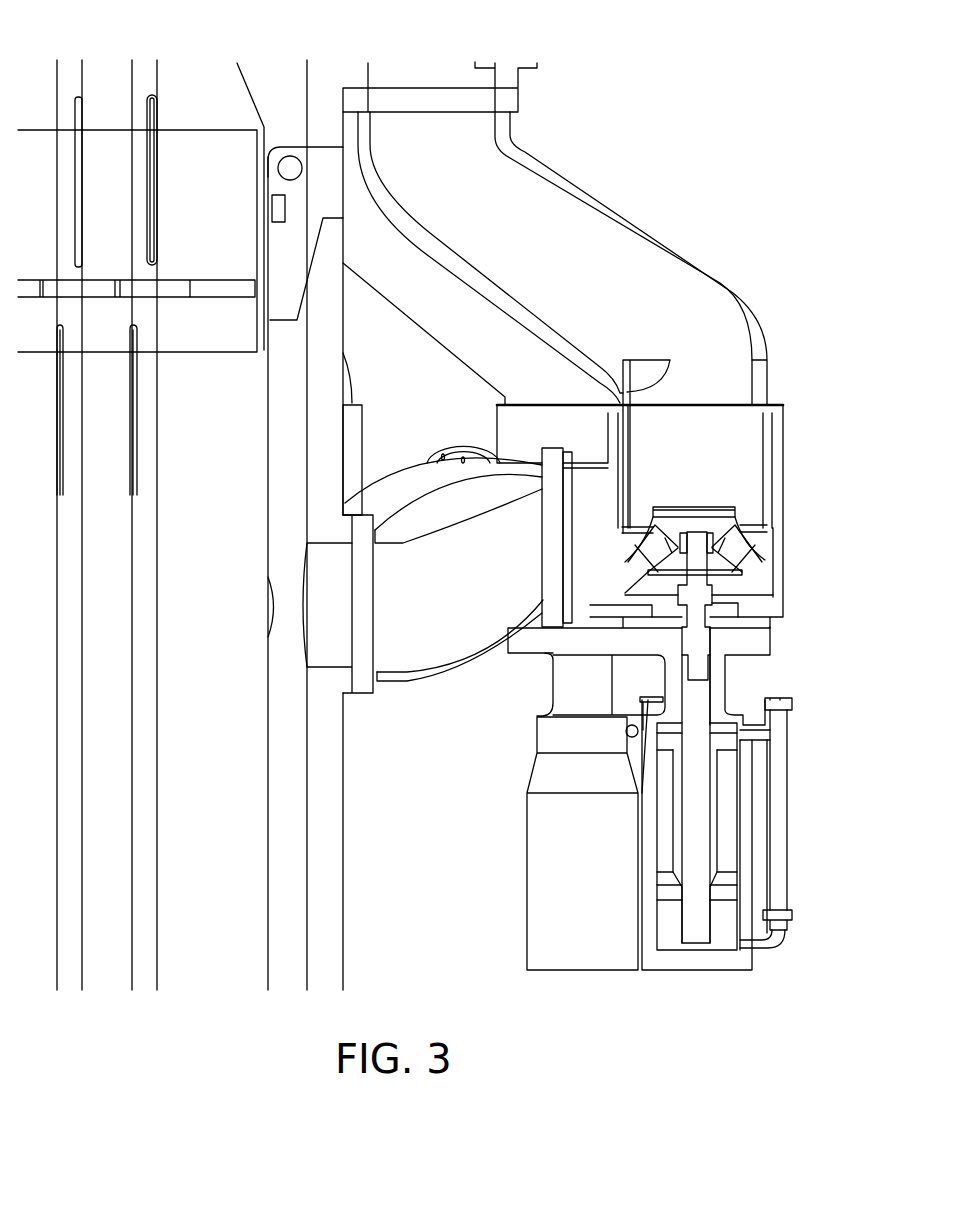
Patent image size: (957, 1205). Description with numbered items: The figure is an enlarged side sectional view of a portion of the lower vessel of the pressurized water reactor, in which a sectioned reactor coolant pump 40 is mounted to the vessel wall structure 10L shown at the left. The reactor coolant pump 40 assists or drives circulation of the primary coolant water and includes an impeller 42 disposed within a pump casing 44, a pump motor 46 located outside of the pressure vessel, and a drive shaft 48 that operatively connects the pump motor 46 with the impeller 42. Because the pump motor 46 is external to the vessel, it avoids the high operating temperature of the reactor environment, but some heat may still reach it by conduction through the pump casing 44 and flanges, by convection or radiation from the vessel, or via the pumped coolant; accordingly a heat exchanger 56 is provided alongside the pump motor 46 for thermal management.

The left side frame structure 10L is at (330, 810).
The reactor coolant pump 40 is at (512, 673).
The impeller 42 is at (737, 555).
The pump casing 44 is at (783, 562).
The pump motor 46 is at (695, 895).
The drive shaft 48 is at (698, 660).
The heat exchanger 56 is at (785, 802).